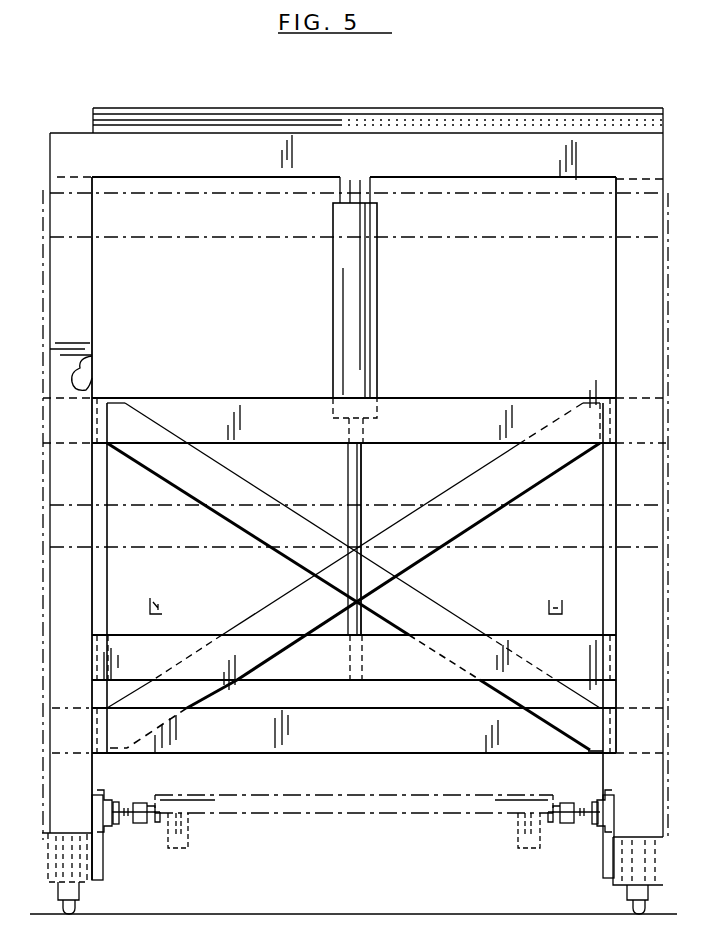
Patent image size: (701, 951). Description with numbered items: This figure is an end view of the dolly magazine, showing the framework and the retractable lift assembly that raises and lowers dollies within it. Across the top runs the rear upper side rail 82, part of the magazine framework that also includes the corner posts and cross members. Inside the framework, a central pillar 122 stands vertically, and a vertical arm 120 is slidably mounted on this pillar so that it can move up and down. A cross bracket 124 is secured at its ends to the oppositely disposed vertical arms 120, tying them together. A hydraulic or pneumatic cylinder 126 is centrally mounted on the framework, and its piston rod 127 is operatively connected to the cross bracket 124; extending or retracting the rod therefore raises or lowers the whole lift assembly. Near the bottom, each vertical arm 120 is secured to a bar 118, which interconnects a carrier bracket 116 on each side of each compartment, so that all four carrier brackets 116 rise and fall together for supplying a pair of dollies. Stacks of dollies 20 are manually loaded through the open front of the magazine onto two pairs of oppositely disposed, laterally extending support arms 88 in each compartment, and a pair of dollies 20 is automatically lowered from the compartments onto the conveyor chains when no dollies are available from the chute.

The rear upper side rail 82 is at (68, 132).
The cross bracket 124 is at (533, 240).
The hydraulic or pneumatic cylinder 126 is at (364, 321).
The central pillar 122 is at (88, 380).
The vertical arm 120 is at (108, 596).
The rod 127 is at (362, 479).
The support arms 88 is at (555, 840).
The carrier bracket 116 is at (106, 806).
The dollies 20 is at (383, 815).
The bar 118 is at (103, 870).